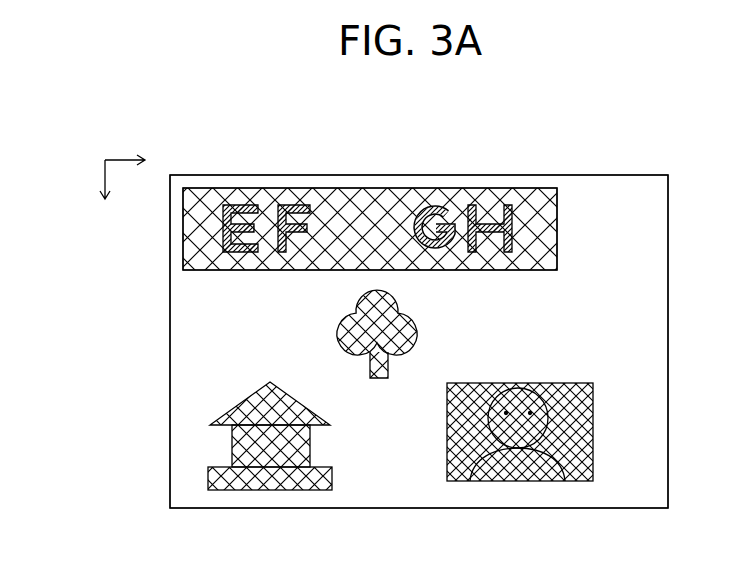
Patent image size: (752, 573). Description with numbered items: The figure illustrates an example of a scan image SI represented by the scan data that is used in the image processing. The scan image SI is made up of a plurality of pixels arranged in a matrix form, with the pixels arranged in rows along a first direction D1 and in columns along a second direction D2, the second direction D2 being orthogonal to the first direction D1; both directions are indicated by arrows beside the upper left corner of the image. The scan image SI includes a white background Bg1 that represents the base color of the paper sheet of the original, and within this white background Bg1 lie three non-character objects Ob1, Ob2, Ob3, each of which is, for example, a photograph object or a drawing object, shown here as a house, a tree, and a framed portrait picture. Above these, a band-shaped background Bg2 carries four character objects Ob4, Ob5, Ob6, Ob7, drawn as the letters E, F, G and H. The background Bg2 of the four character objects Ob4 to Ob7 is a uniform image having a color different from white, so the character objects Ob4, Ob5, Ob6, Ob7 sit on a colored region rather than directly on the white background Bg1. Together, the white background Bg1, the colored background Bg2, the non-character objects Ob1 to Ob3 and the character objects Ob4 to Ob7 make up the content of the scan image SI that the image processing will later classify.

The scan image SI is at (197, 174).
The white background Bg1 is at (636, 184).
The background of the character objects Bg2 is at (482, 200).
The first direction D1 is at (142, 153).
The second direction D2 is at (105, 196).
The non-character object Ob1 is at (261, 491).
The non-character object Ob2 is at (415, 328).
The non-character object Ob3 is at (524, 482).
The character object Ob4 is at (249, 205).
The character object Ob5 is at (311, 200).
The character object Ob6 is at (430, 205).
The character object Ob7 is at (517, 188).